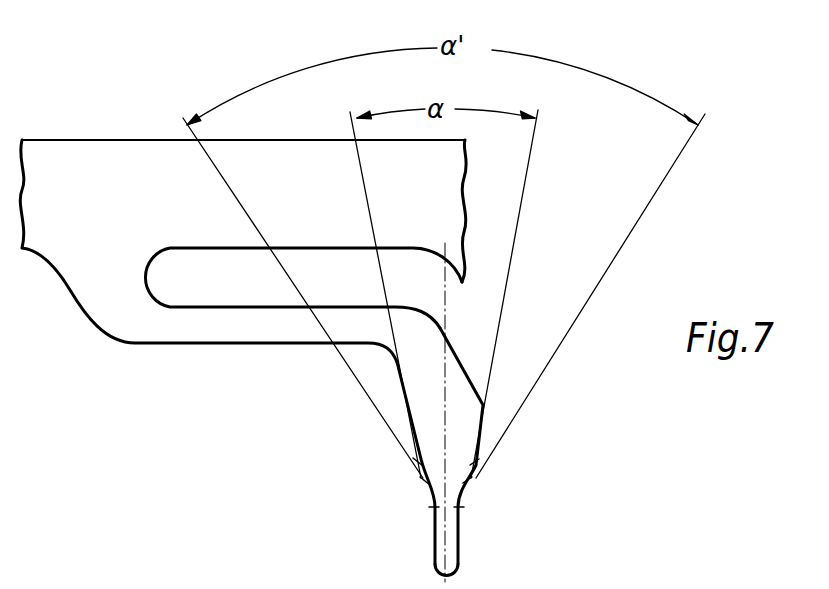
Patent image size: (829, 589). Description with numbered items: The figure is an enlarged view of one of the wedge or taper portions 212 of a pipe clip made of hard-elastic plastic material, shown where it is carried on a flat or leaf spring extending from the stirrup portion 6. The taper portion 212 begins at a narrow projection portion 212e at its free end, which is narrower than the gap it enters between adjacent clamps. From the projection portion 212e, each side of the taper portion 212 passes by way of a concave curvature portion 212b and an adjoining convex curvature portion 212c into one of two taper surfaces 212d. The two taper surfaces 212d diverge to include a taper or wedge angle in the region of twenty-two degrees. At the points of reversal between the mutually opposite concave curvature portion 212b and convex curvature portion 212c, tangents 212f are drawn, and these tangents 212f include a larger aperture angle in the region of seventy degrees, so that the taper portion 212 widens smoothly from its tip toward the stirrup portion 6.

The stirrup portion 6 is at (62, 139).
The taper portion 212 is at (466, 429).
The concave curvature portion 212b is at (430, 487).
The convex curvature portion 212c is at (421, 473).
The taper surfaces 212d is at (407, 408).
The projection portion 212e is at (456, 561).
The tangents 212f is at (222, 184).